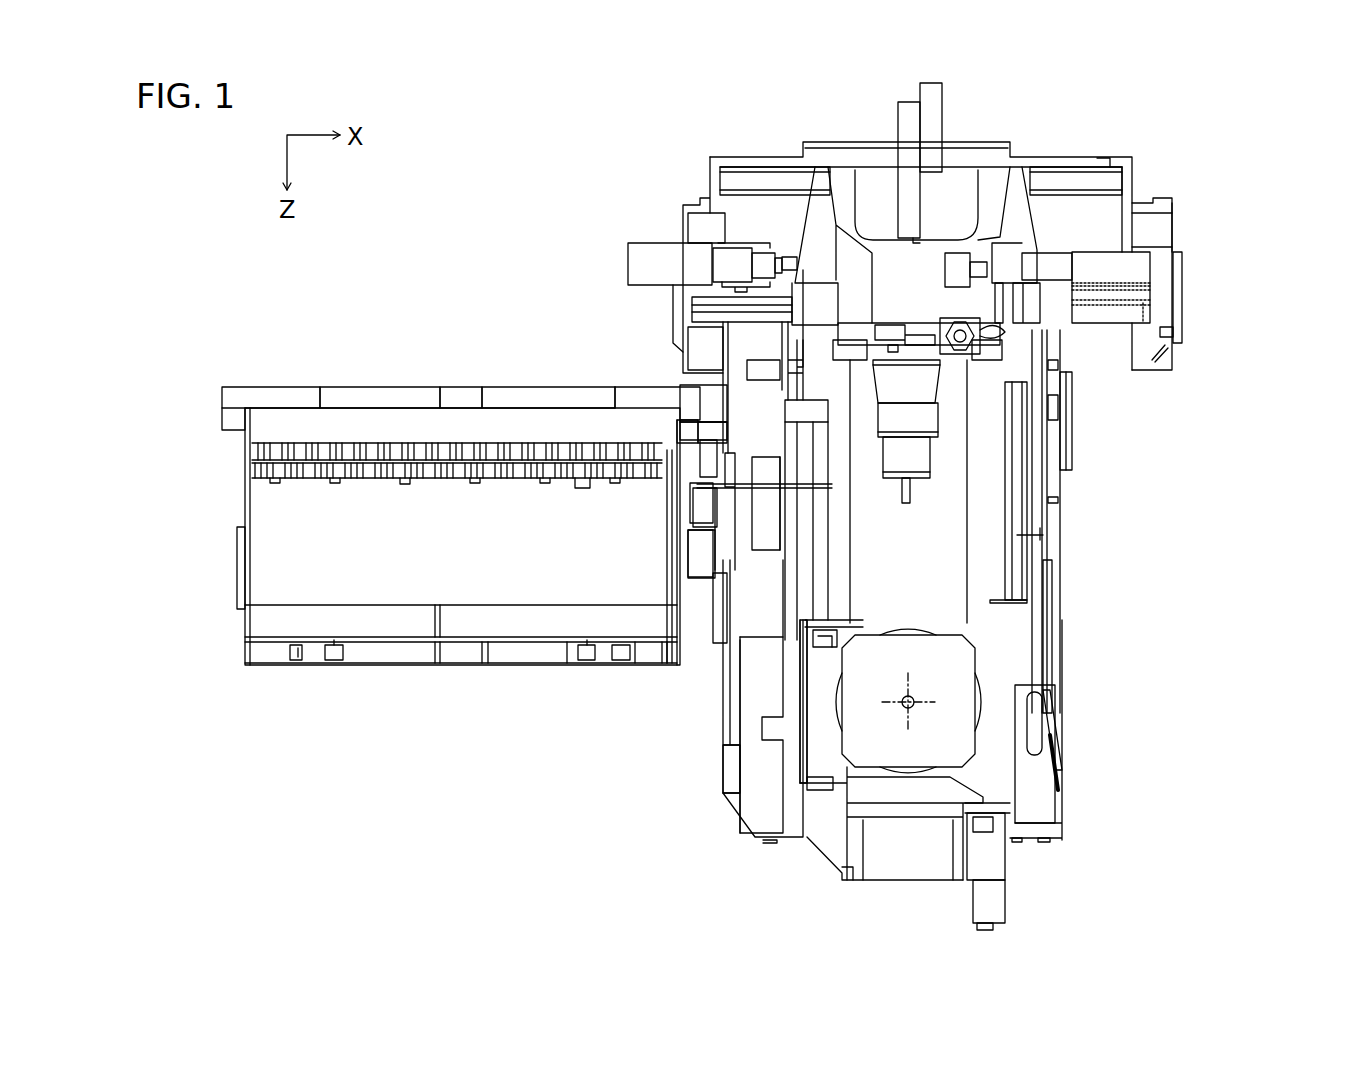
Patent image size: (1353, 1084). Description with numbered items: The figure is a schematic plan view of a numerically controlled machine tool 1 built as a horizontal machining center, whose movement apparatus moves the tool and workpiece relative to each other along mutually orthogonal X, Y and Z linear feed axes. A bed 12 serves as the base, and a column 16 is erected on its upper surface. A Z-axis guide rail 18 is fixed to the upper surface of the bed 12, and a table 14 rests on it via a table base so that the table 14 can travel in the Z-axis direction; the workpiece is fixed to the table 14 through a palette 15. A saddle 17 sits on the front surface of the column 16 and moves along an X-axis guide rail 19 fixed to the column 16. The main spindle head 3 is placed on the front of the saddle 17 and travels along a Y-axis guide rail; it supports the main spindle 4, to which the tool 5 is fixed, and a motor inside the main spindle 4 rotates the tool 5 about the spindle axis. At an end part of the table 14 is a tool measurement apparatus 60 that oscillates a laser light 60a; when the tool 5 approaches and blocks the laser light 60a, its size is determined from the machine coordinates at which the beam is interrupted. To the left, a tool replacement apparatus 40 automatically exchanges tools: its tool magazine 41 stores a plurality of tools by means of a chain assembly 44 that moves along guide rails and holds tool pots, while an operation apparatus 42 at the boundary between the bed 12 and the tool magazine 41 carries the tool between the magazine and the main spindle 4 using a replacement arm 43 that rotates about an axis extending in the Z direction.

The machine tool 1 is at (1175, 162).
The main spindle head 3 is at (925, 387).
The main spindle 4 is at (922, 455).
The tool 5 is at (910, 495).
The bed 12 is at (942, 563).
The table 14 is at (993, 720).
The palette 15 is at (942, 668).
The column 16 is at (1150, 232).
The saddle 17 is at (962, 270).
The Z-axis guide rail 18 is at (1043, 533).
The X-axis guide rail 19 is at (1102, 310).
The tool replacement apparatus 40 is at (488, 301).
The tool magazine 41 is at (546, 398).
The operation apparatus 42 is at (758, 513).
The replacement arm 43 is at (740, 525).
The chain assembly 44 is at (393, 478).
The tool measurement apparatus 60 is at (823, 610).
The laser light 60a is at (826, 625).